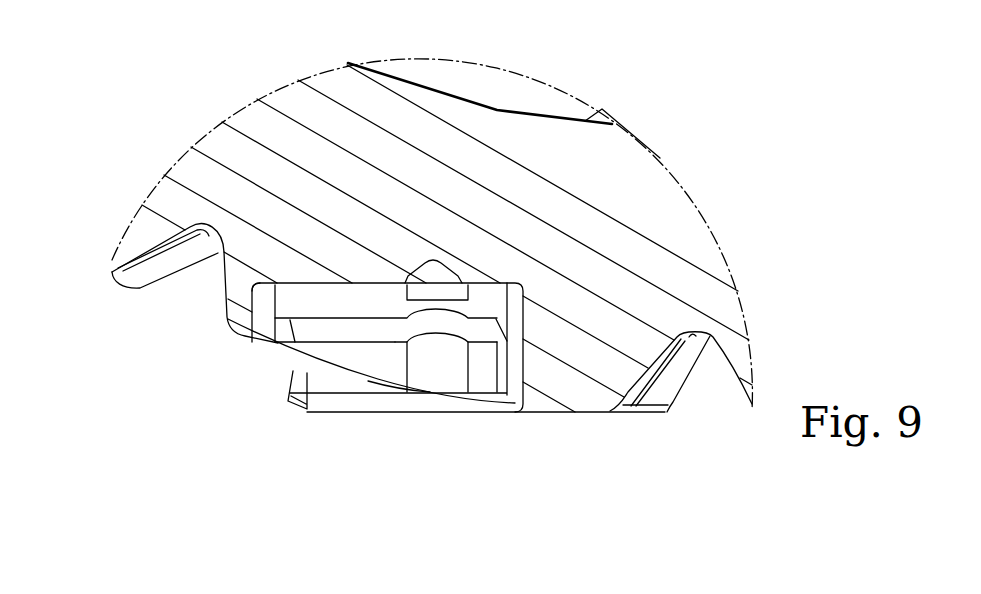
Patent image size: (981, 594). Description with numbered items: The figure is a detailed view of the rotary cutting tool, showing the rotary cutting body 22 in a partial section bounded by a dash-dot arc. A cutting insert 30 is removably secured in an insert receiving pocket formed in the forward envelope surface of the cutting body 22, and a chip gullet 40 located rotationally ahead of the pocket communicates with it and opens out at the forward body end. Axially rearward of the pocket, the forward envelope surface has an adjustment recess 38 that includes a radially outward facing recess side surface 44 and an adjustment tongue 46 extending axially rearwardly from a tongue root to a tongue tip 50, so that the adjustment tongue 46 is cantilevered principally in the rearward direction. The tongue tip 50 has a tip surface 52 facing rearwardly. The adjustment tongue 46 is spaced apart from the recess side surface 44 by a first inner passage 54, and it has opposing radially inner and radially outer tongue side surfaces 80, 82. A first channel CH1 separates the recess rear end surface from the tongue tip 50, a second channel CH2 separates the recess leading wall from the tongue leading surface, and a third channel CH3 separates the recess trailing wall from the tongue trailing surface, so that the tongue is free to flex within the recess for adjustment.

The rotary cutting body 22 is at (634, 206).
The radially inner tongue side surface 80 is at (386, 292).
The chip gullet 40 is at (193, 302).
The cutting insert 30 is at (347, 418).
The first inner passage 54 is at (318, 318).
The recess side surface 44 is at (376, 312).
The adjustment recess 38 is at (442, 336).
The tip surface 52 is at (374, 358).
The adjustment tongue 46 is at (422, 378).
The third channel CH3 is at (508, 396).
The tongue tip 50 is at (322, 355).
The radially outer tongue side surface 82 is at (333, 372).
The first channel CH1 is at (281, 289).
The second channel CH2 is at (282, 336).